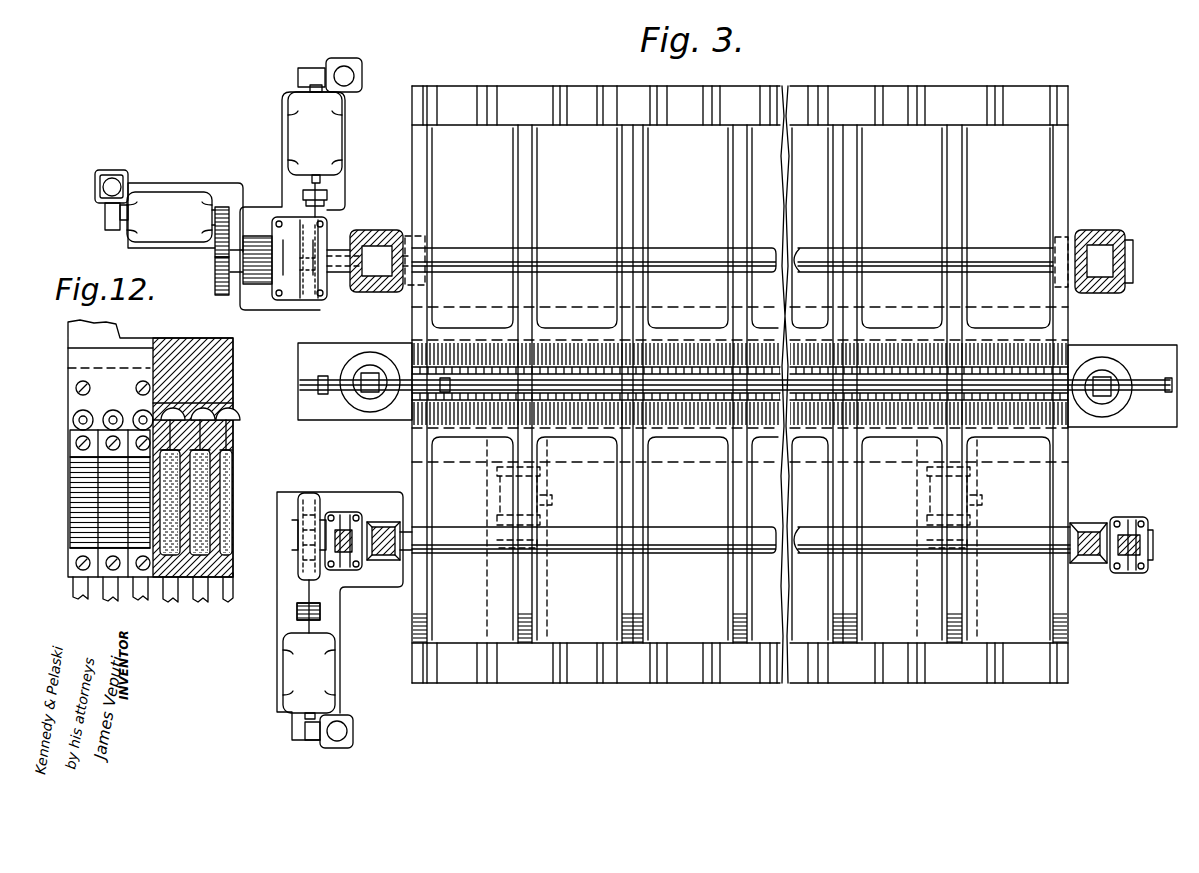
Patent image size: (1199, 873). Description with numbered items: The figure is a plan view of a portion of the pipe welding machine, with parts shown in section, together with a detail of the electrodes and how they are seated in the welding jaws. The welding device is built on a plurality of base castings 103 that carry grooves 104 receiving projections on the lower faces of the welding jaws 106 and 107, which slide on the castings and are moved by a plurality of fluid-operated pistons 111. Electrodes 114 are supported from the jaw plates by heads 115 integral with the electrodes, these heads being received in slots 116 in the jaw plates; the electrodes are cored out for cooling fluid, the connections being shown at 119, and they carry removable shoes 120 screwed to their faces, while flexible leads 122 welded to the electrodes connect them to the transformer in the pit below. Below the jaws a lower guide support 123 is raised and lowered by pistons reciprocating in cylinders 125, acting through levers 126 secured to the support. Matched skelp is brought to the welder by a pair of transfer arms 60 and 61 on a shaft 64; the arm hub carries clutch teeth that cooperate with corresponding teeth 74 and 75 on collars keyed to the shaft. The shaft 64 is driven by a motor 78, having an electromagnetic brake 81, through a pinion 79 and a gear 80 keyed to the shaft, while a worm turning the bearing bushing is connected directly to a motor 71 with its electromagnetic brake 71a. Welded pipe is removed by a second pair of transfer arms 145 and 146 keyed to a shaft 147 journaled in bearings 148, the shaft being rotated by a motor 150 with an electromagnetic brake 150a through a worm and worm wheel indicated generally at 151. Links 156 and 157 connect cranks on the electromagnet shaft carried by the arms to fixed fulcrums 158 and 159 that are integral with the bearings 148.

In FIG. 3, the base castings 103 is at (580, 95).
In FIG. 3, the grooves 104 is at (486, 95).
In FIG. 3, the welding jaw 106 is at (686, 313).
In FIG. 12, the welding jaw 106 is at (220, 362).
In FIG. 3, the welding jaw 107 is at (689, 455).
In FIG. 3, the shaft 64 is at (578, 248).
In FIG. 3, the shaft 147 is at (695, 527).
In FIG. 3, the electrodes 114 is at (474, 345).
In FIG. 12, the electrodes 114 is at (215, 440).
In FIG. 3, the lower guide support 123 is at (580, 380).
In FIG. 3, the cylinders 125 is at (350, 368).
In FIG. 3, the levers 126 is at (390, 350).
In FIG. 3, the clutch teeth 75 is at (416, 272).
In FIG. 3, the transfer arm 60 is at (370, 230).
In FIG. 3, the transfer arm 61 is at (1098, 232).
In FIG. 3, the clutch teeth 74 is at (260, 235).
In FIG. 3, the pinion 79 is at (222, 207).
In FIG. 3, the gear 80 is at (215, 280).
In FIG. 3, the motor 71 is at (335, 135).
In FIG. 3, the electromagnetic brake 71a is at (330, 70).
In FIG. 3, the motor 78 is at (178, 185).
In FIG. 3, the electromagnetic brake 81 is at (95, 200).
In FIG. 3, the fluid-operated pistons 111 is at (545, 497).
In FIG. 3, the bearings 148 is at (318, 510).
In FIG. 3, the fixed fulcrum 158 is at (345, 512).
In FIG. 3, the link 156 is at (343, 562).
In FIG. 3, the transfer arm 145 is at (385, 562).
In FIG. 3, the motor 150 is at (325, 668).
In FIG. 3, the electromagnetic brake 150a is at (388, 732).
In FIG. 3, the transfer arm 146 is at (1088, 525).
In FIG. 3, the link 157 is at (1093, 563).
In FIG. 3, the fixed fulcrum 159 is at (1128, 570).
In FIG. 12, the cooling fluid connections 119 is at (143, 410).
In FIG. 12, the worm and worm wheel 151 is at (228, 490).
In FIG. 12, the slots 116 is at (80, 412).
In FIG. 12, the heads 115 is at (72, 420).
In FIG. 12, the removable shoes 120 is at (68, 553).
In FIG. 12, the flexible leads 122 is at (110, 590).